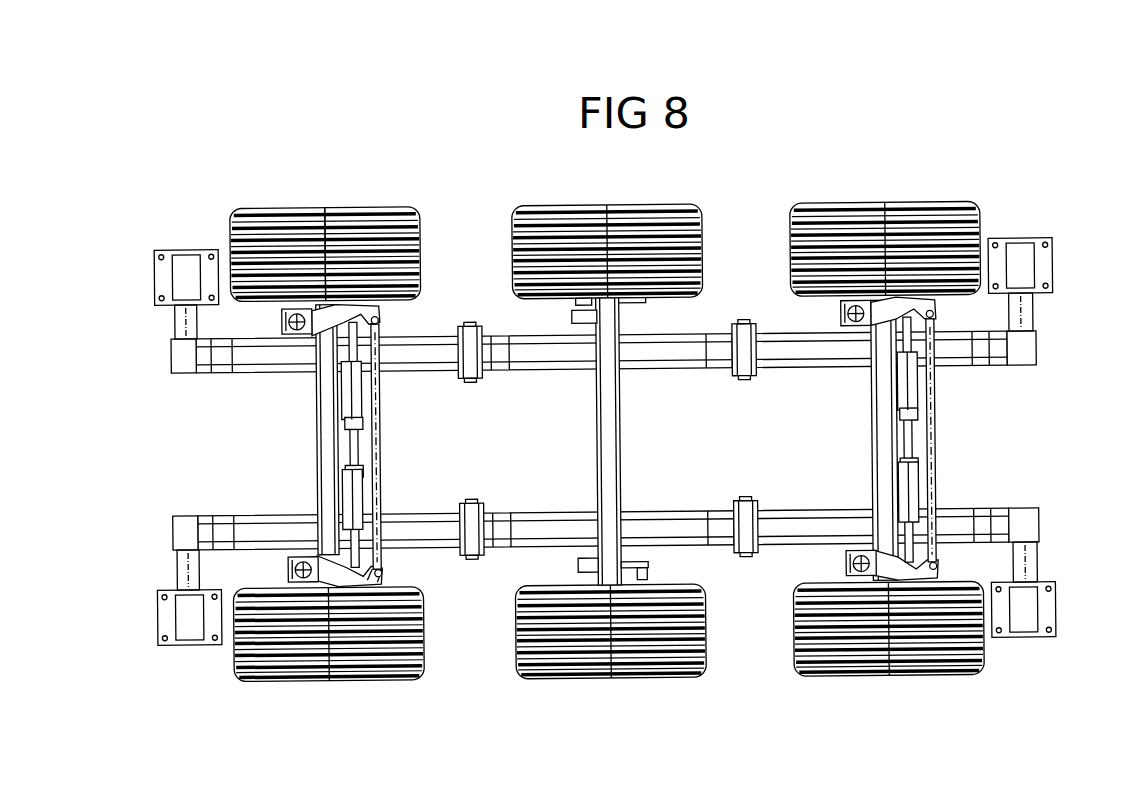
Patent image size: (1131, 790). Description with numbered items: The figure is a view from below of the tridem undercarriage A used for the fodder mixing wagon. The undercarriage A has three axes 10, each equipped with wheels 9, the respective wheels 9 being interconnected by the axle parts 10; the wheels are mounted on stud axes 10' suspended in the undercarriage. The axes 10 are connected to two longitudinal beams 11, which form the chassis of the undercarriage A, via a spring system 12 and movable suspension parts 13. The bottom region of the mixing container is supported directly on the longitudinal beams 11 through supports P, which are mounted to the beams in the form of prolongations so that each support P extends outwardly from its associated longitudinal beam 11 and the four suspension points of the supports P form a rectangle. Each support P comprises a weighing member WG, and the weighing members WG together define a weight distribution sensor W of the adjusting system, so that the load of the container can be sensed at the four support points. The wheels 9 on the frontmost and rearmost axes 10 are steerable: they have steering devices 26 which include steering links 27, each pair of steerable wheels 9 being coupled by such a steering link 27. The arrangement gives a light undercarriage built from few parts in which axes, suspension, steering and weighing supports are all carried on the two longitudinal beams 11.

The wheel 9 is at (356, 225).
The axis 10 is at (338, 213).
The stud axis 10' is at (311, 445).
The longitudinal beam 11 is at (245, 373).
The spring system 12 is at (287, 355).
The movable suspension part 13 is at (480, 362).
The steering device 26 is at (360, 572).
The steering link 27 is at (380, 451).
The support P is at (154, 292).
The weighing member WG is at (182, 316).
The weight distribution sensor W is at (1062, 269).
The undercarriage A is at (893, 170).